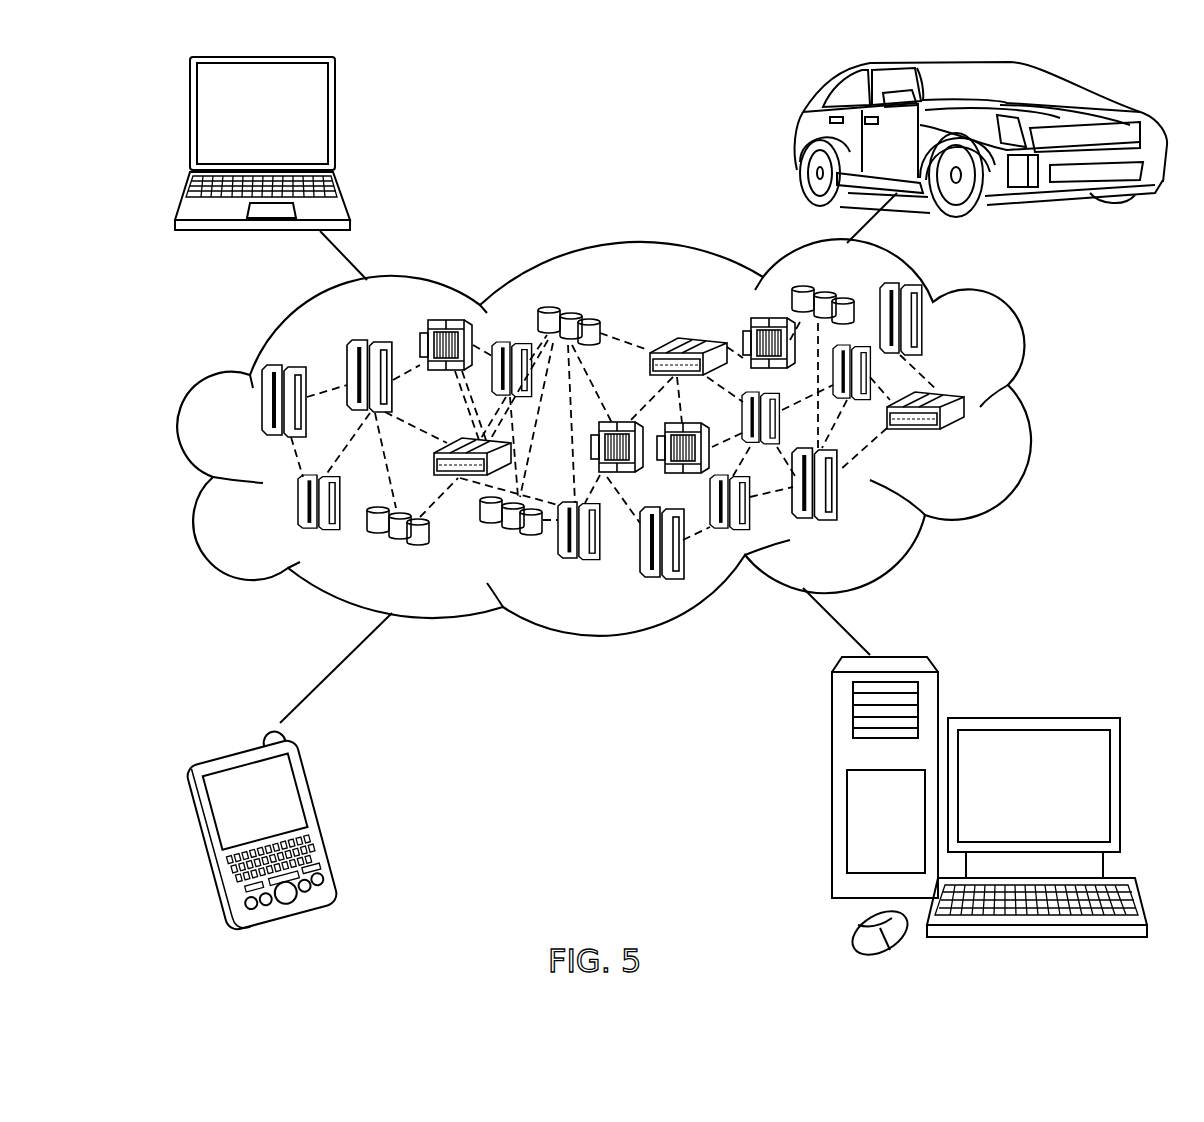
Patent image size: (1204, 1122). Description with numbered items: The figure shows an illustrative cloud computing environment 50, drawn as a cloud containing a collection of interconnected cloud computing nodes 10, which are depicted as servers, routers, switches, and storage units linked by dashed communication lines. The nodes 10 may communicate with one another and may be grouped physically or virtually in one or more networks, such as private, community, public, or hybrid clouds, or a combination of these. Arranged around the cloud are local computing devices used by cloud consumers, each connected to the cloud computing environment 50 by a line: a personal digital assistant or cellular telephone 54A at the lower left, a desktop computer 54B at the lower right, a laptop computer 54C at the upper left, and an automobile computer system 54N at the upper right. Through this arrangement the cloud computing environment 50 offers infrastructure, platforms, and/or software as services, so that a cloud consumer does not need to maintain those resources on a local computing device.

The cloud computing nodes 10 is at (975, 447).
The cloud computing environment 50 is at (1030, 410).
The personal digital assistant or cellular telephone 54A is at (323, 815).
The desktop computer 54B is at (1031, 718).
The laptop computer 54C is at (335, 121).
The automobile computer system 54N is at (798, 140).